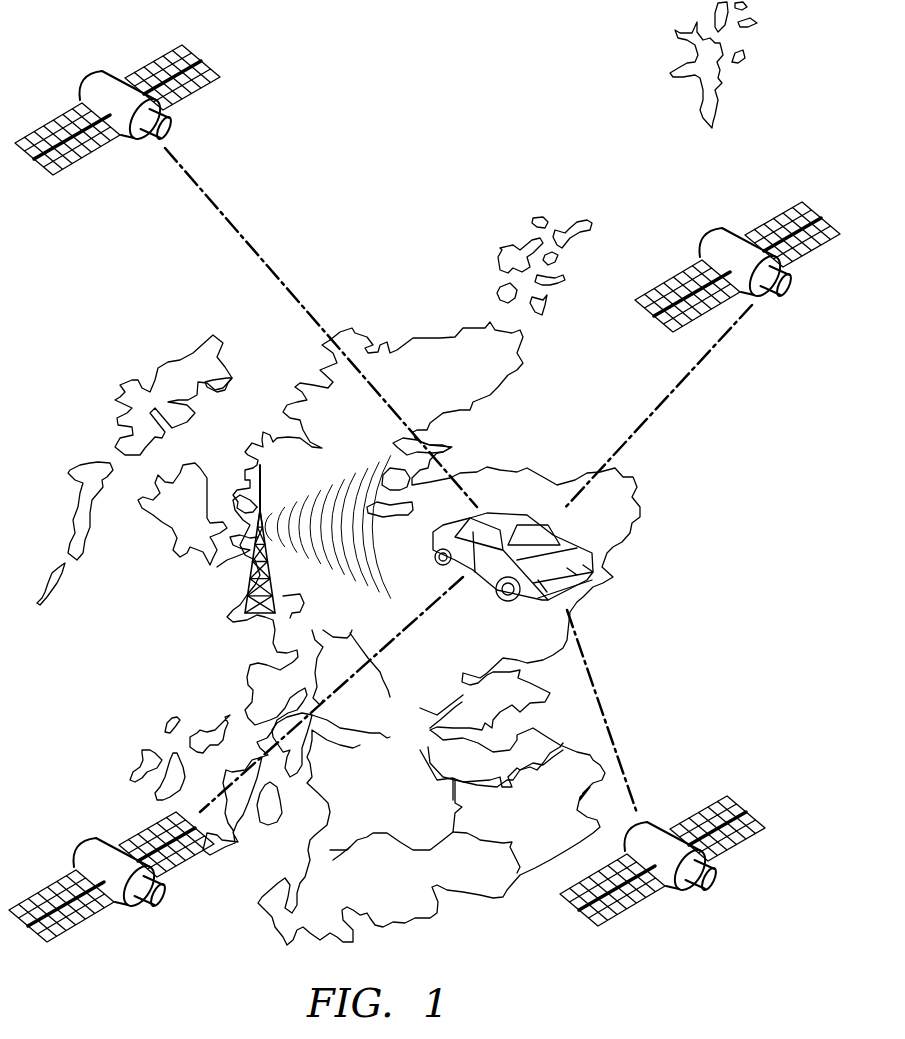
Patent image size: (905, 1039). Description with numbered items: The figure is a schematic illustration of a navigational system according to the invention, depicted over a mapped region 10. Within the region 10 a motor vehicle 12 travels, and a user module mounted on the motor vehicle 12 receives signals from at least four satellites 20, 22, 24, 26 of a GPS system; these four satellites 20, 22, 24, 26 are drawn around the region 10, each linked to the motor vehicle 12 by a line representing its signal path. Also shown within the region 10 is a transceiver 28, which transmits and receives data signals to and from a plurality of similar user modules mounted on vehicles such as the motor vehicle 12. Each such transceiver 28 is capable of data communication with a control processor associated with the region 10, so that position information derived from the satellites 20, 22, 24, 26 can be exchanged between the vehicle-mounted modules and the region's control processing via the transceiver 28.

The region 10 is at (394, 900).
The motor vehicle 12 is at (618, 571).
The satellite 20 is at (153, 62).
The satellite 22 is at (773, 217).
The satellite 24 is at (142, 910).
The satellite 26 is at (643, 906).
The transceiver 28 is at (250, 567).